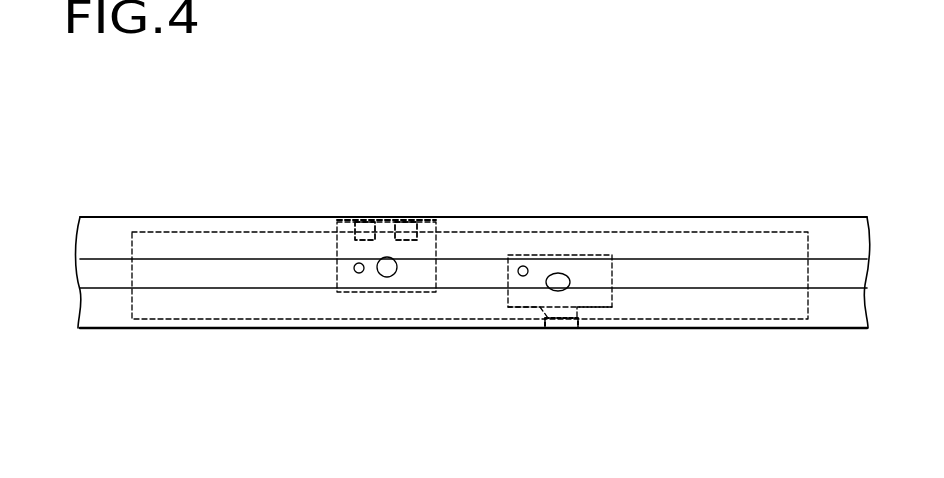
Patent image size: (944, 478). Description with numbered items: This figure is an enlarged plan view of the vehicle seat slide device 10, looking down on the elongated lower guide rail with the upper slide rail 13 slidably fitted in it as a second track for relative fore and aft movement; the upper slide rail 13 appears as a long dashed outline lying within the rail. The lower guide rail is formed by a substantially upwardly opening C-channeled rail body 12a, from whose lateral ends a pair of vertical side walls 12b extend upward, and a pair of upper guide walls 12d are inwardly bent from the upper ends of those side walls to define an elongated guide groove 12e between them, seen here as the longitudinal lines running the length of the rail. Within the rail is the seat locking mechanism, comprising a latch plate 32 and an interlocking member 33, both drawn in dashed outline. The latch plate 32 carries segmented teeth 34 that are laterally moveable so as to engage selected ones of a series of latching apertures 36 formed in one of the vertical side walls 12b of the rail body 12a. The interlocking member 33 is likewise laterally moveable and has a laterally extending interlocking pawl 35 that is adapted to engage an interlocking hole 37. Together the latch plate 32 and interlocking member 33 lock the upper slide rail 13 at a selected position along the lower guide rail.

The vehicle seat slide device 10 is at (506, 140).
The rail body 12a is at (768, 217).
The vertical side walls 12b is at (265, 217).
The upper guide walls 12d is at (689, 297).
The guide groove 12e is at (108, 272).
The upper slide rail 13 is at (178, 320).
The latch plate 32 is at (410, 275).
The interlocking member 33 is at (598, 265).
The segmented teeth 34 is at (385, 217).
The interlocking pawl 35 is at (550, 328).
The latching apertures 36 is at (350, 217).
The interlocking hole 37 is at (565, 328).